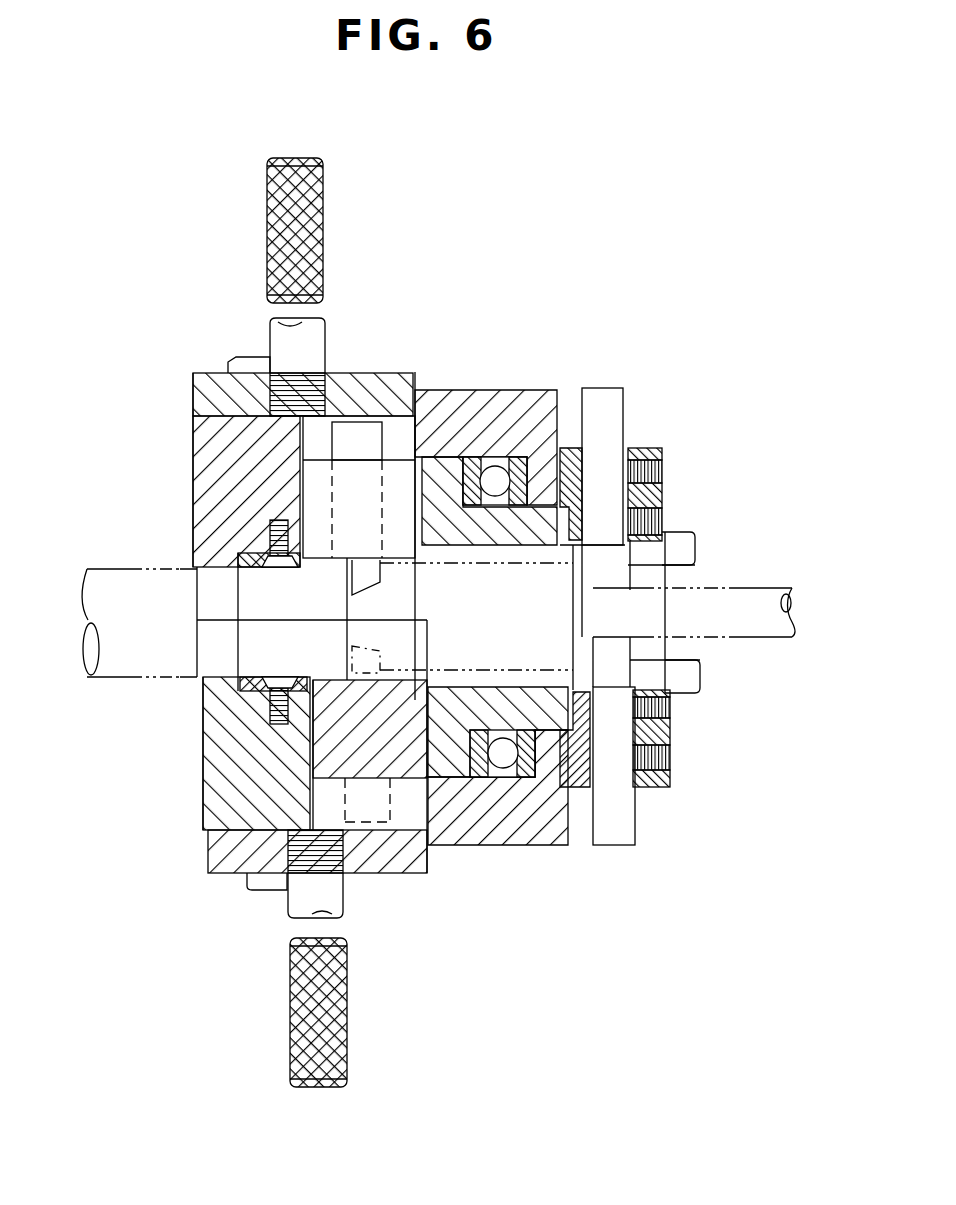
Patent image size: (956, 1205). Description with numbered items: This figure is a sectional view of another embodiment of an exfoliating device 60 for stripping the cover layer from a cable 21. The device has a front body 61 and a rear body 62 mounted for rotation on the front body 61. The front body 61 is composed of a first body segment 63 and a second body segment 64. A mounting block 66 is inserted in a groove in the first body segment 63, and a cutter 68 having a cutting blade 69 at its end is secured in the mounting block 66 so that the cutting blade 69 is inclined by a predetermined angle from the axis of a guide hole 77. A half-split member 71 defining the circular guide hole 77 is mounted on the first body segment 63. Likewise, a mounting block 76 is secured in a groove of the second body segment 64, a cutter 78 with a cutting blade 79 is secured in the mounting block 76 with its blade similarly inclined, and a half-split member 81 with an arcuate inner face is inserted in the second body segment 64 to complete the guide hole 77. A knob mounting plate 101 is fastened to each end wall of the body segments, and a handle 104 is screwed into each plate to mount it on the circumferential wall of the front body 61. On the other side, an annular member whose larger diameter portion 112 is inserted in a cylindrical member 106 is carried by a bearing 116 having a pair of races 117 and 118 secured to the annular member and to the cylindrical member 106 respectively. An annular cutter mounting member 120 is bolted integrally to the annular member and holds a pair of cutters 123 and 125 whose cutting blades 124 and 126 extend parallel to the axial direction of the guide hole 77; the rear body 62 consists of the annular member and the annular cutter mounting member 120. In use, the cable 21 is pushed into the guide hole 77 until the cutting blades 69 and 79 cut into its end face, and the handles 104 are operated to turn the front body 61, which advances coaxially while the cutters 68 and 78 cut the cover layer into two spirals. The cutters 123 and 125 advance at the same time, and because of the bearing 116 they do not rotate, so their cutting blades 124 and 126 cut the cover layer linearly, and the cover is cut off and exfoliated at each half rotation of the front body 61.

The cable 21 is at (122, 677).
The exfoliating device 60 is at (441, 340).
The front body 61 is at (188, 464).
The rear body 62 is at (670, 493).
The first body segment 63 is at (205, 488).
The second body segment 64 is at (218, 795).
The mounting block 66 is at (397, 483).
The cutter 68 is at (357, 427).
The cutting blade 69 is at (372, 577).
The half-split member 71 is at (240, 560).
The mounting block 76 is at (366, 760).
The guide hole 77 is at (300, 568).
The cutter 78 is at (420, 820).
The cutting blade 79 is at (375, 655).
The half-split member 81 is at (245, 685).
The knob mounting plate 101 is at (207, 377).
The handle 104 is at (323, 206).
The cylindrical member 106 is at (488, 395).
The larger diameter portion 112 is at (525, 540).
The bearing 116 is at (495, 478).
The race 117 is at (487, 780).
The race 118 is at (530, 785).
The annular cutter mounting member 120 is at (665, 738).
The cutter 123 is at (615, 405).
The cutting blade 124 is at (615, 580).
The cutter 125 is at (620, 825).
The cutting blade 126 is at (620, 660).